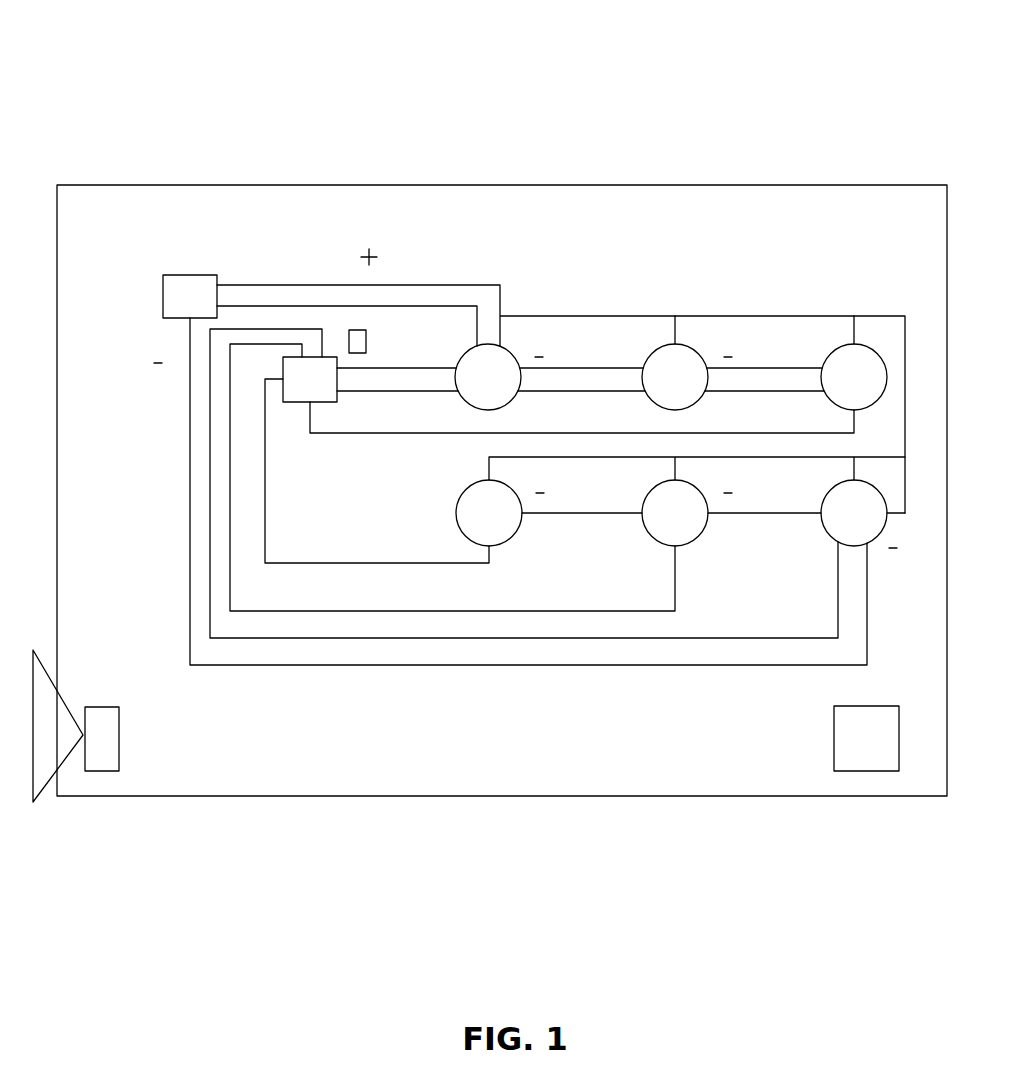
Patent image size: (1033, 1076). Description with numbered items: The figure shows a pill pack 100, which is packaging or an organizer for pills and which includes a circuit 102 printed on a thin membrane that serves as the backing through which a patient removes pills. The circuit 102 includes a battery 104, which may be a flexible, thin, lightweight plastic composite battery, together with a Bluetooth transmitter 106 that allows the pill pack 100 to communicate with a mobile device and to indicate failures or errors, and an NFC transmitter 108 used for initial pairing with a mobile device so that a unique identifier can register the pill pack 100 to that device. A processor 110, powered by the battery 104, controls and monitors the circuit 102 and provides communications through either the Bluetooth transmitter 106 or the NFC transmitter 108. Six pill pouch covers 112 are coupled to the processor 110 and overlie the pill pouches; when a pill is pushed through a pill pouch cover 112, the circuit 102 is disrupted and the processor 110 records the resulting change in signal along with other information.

The pill pack 100 is at (130, 97).
The circuit 102 is at (650, 260).
The battery 104 is at (190, 272).
The Bluetooth transmitter 106 is at (91, 687).
The NFC transmitter 108 is at (827, 738).
The processor 110 is at (292, 418).
The pill pouch covers 112 is at (642, 346).